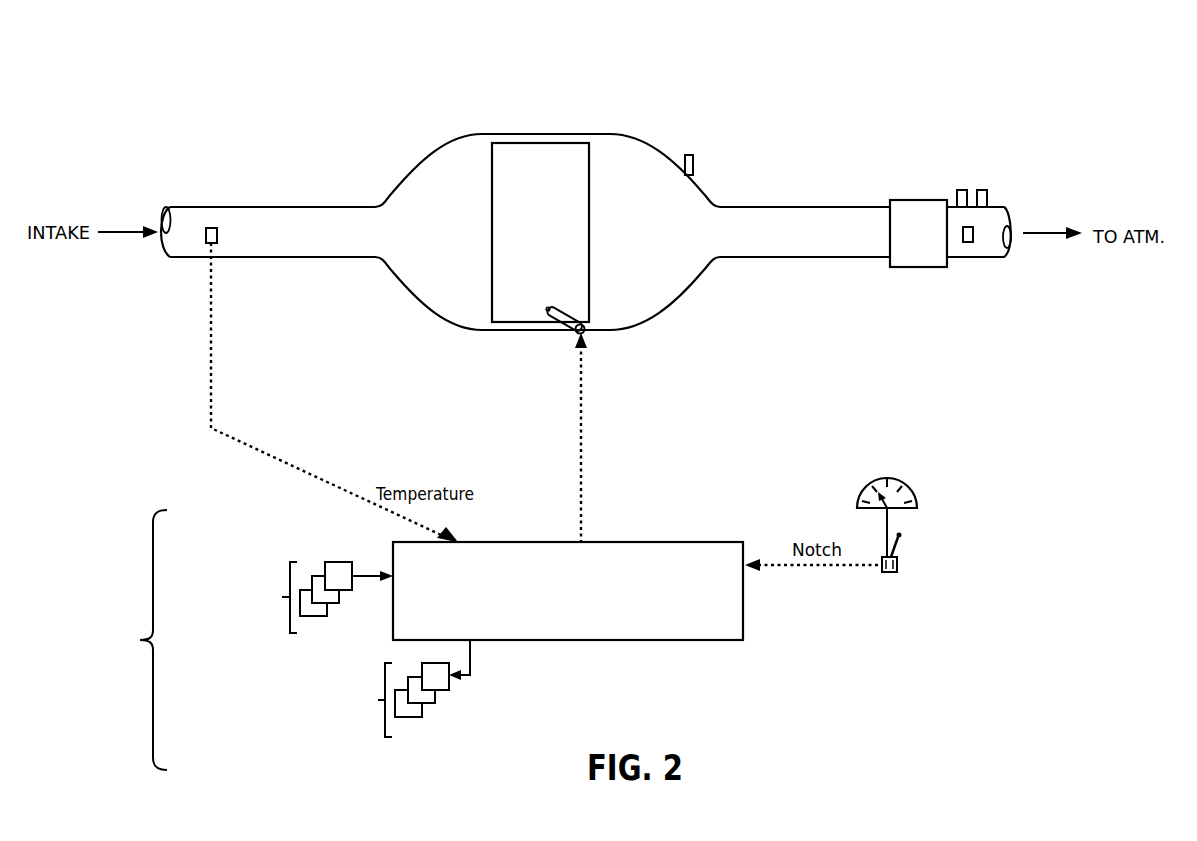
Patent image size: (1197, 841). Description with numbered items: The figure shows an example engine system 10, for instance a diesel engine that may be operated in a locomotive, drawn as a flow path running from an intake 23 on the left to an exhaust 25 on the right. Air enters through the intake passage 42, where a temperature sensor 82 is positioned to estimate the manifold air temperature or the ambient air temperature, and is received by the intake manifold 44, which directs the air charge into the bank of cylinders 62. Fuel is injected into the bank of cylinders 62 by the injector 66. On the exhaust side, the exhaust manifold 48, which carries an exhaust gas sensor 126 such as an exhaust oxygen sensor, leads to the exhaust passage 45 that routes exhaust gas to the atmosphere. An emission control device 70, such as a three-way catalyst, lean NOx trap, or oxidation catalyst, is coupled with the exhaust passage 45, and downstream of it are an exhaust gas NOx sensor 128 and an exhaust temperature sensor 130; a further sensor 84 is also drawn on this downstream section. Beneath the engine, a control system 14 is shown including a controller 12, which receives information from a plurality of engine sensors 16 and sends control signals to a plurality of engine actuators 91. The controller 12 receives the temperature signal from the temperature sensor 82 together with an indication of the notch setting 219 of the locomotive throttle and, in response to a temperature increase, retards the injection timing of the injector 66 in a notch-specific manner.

The engine system 10 is at (1095, 58).
The intake 23 is at (250, 88).
The exhaust 25 is at (925, 125).
The intake passage 42 is at (200, 207).
The temperature sensor 82 is at (217, 240).
The intake manifold 44 is at (406, 230).
The bank of cylinders 62 is at (540, 232).
The injector 66 is at (549, 308).
The exhaust gas sensor 126 is at (690, 155).
The exhaust manifold 48 is at (690, 231).
The exhaust passage 45 is at (824, 207).
The emission control device 70 is at (918, 233).
The exhaust gas (NOx) sensor 128 is at (961, 189).
The exhaust temperature sensor 130 is at (982, 189).
The temperature sensor 84 is at (973, 240).
The notch setting 219 is at (893, 478).
The controller 12 is at (568, 591).
The engine sensors 16 is at (303, 597).
The engine actuators 91 is at (383, 688).
The control system 14 is at (123, 640).